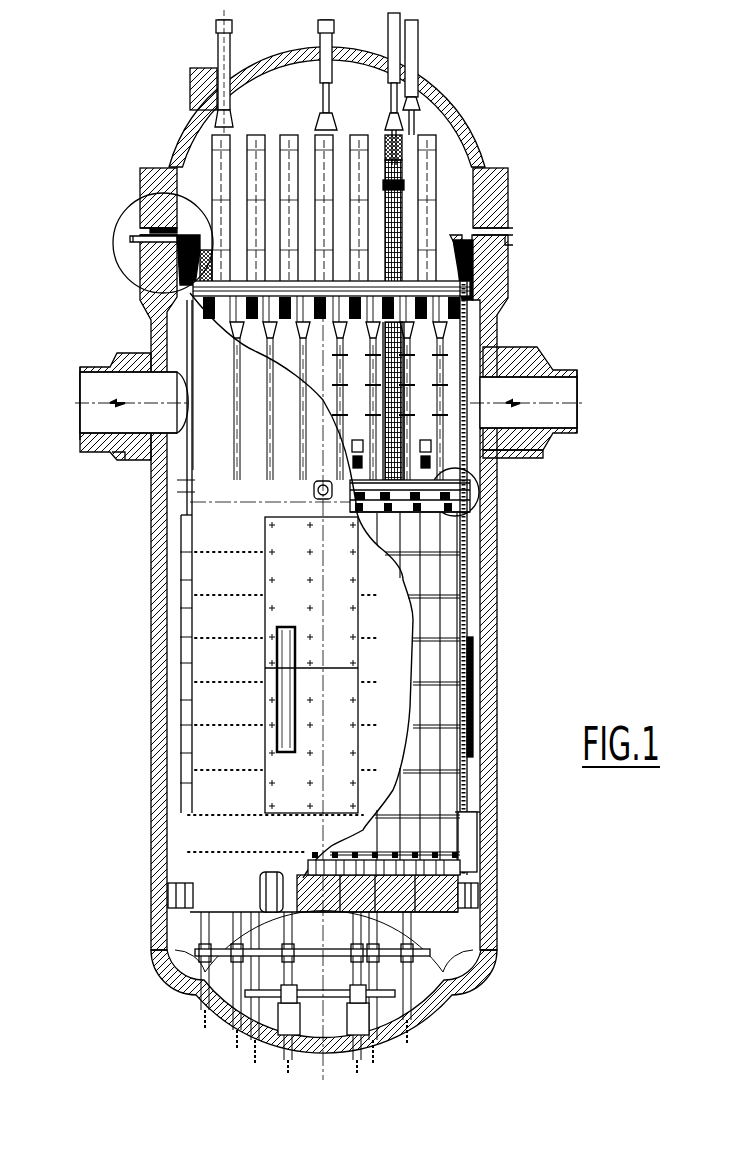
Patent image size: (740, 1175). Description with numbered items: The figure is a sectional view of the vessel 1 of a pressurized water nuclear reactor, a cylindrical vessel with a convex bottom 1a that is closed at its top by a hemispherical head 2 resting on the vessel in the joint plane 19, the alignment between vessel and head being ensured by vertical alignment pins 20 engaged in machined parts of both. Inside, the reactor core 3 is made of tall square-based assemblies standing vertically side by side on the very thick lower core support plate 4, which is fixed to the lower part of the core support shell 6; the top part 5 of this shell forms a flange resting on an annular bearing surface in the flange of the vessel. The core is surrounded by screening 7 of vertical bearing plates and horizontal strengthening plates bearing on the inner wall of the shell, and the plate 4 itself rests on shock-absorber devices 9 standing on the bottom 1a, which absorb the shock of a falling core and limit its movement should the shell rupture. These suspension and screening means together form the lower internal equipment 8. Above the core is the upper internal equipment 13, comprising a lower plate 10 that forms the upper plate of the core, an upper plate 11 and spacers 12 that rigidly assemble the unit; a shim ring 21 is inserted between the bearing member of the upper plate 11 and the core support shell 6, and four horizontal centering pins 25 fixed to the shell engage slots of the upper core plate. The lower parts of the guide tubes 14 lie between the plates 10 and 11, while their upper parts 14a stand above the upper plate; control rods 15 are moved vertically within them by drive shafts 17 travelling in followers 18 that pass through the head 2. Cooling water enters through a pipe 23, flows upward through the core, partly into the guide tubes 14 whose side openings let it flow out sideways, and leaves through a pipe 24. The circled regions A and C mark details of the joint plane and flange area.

The vessel 1 is at (488, 648).
The convex bottom 1a is at (437, 995).
The head 2 is at (466, 133).
The reactor core 3 is at (470, 705).
The lower core support plate 4 is at (443, 915).
The top part of core support shell 5 is at (466, 266).
The core support shell 6 is at (468, 847).
The screening 7 is at (495, 812).
The lower internal equipment 8 is at (465, 587).
The shock-absorber devices 9 is at (330, 1032).
The lower plate 10 is at (430, 447).
The upper plate 11 is at (458, 305).
The spacers 12 is at (408, 358).
The upper internal equipment 13 is at (330, 377).
The guide tubes 14 is at (477, 380).
The upper parts of guide tubes 14a is at (413, 181).
The control rods 15 is at (398, 160).
The drive shafts 17 is at (385, 138).
The followers 18 is at (388, 36).
The joint plane 19 is at (483, 227).
The vertical alignment pins 20 is at (175, 245).
The shim ring 21 is at (168, 230).
The pipe 23 is at (537, 450).
The pipe 24 is at (112, 437).
The centering pins 25 is at (314, 492).
The detail A is at (477, 477).
The detail C is at (128, 205).